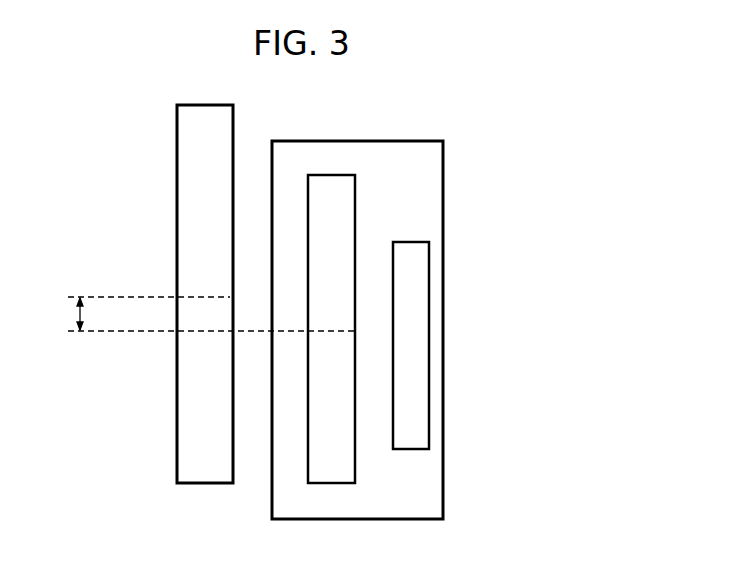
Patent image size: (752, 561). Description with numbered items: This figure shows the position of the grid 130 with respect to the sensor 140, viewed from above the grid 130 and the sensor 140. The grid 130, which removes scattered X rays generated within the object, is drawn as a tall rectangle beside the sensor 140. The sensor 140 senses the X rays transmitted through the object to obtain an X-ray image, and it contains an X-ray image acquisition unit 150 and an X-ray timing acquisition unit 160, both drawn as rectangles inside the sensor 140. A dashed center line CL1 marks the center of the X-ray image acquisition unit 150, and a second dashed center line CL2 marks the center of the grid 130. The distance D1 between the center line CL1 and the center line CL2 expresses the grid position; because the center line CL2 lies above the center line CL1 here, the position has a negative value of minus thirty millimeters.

The grid 130 is at (177, 476).
The sensor 140 is at (443, 198).
The X-ray image acquisition unit 150 is at (356, 478).
The X-ray timing acquisition unit 160 is at (429, 346).
The center line of the X-ray image acquisition unit CL1 is at (115, 332).
The center line of the grid CL2 is at (115, 296).
The distance between center lines D1 is at (78, 313).